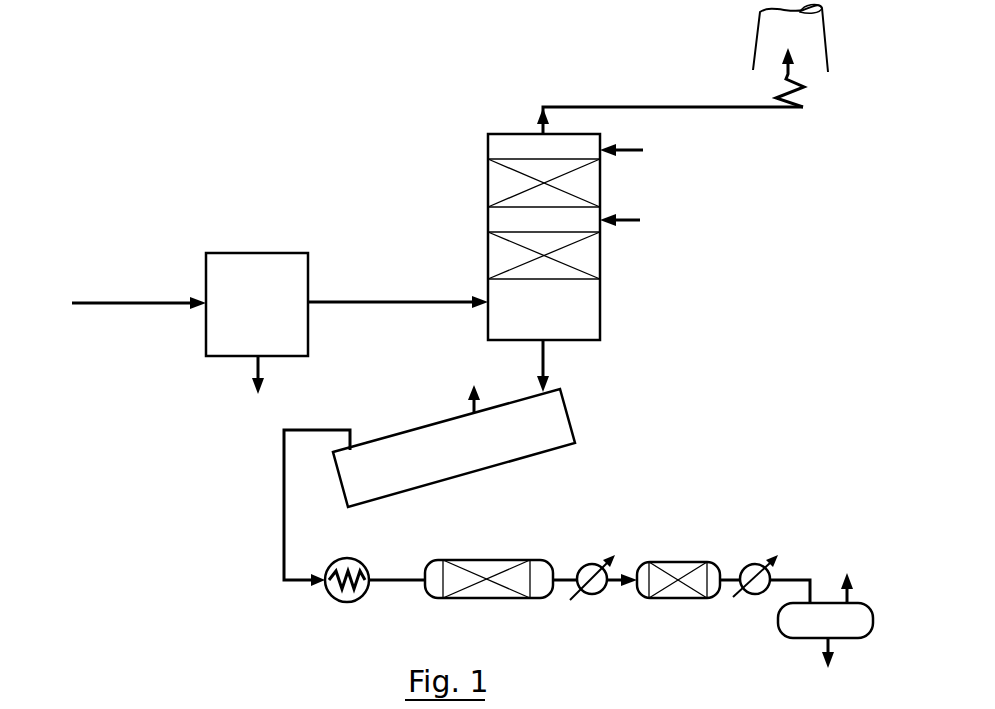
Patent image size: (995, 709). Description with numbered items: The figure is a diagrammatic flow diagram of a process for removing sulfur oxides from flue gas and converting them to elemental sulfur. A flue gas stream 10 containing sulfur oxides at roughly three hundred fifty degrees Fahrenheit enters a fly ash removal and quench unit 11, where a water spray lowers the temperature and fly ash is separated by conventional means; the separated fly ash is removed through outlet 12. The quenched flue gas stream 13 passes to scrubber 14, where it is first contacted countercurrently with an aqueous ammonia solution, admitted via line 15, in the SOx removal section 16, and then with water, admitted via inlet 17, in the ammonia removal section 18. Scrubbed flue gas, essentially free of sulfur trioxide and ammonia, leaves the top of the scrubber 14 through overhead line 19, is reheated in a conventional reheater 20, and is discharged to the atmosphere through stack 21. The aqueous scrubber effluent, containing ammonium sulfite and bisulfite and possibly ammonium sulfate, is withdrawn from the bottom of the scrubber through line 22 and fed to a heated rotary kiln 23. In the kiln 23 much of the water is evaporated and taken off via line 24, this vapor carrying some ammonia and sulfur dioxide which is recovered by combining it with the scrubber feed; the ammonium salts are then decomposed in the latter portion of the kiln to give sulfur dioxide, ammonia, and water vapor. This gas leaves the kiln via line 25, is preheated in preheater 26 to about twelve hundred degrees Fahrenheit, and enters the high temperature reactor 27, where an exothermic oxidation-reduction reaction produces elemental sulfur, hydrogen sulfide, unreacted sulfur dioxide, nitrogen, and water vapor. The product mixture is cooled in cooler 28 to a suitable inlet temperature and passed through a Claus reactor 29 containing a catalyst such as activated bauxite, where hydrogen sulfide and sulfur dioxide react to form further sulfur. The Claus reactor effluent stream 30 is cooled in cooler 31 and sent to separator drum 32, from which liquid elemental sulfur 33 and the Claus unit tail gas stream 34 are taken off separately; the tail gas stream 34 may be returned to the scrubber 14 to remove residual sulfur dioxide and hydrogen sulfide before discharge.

The flue gas stream 10 is at (145, 294).
The fly ash removal and quench unit 11 is at (283, 249).
The fly ash outlet 12 is at (260, 366).
The quenched flue gas stream 13 is at (416, 298).
The scrubber 14 is at (473, 223).
The line 15 is at (628, 218).
The SOx removal section 16 is at (601, 256).
The inlet 17 is at (630, 149).
The ammonia removal section 18 is at (601, 181).
The overhead line 19 is at (622, 99).
The reheater 20 is at (806, 96).
The stack 21 is at (828, 31).
The line 22 is at (545, 364).
The heated rotary kiln 23 is at (508, 464).
The line 24 is at (468, 402).
The line 25 is at (316, 437).
The preheater 26 is at (346, 560).
The high temperature reactor 27 is at (484, 566).
The cooler 28 is at (594, 559).
The Claus reactor 29 is at (678, 558).
The Claus reactor effluent stream 30 is at (729, 574).
The cooler 31 is at (758, 564).
The separator drum 32 is at (875, 620).
The liquid elemental sulfur 33 is at (832, 648).
The Claus unit tail gas stream 34 is at (850, 588).